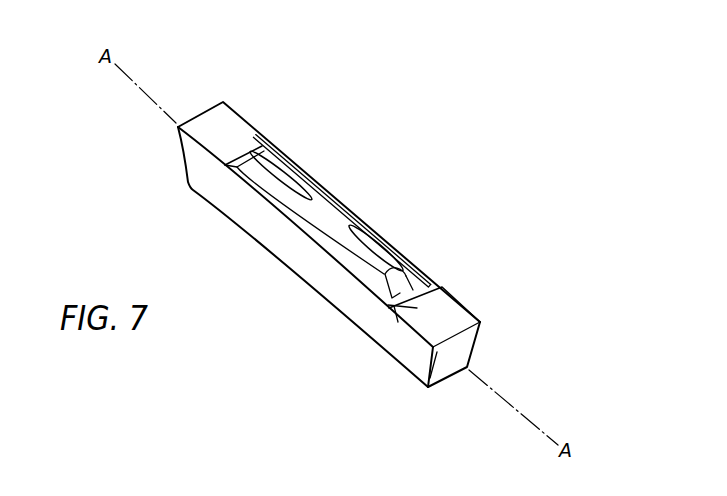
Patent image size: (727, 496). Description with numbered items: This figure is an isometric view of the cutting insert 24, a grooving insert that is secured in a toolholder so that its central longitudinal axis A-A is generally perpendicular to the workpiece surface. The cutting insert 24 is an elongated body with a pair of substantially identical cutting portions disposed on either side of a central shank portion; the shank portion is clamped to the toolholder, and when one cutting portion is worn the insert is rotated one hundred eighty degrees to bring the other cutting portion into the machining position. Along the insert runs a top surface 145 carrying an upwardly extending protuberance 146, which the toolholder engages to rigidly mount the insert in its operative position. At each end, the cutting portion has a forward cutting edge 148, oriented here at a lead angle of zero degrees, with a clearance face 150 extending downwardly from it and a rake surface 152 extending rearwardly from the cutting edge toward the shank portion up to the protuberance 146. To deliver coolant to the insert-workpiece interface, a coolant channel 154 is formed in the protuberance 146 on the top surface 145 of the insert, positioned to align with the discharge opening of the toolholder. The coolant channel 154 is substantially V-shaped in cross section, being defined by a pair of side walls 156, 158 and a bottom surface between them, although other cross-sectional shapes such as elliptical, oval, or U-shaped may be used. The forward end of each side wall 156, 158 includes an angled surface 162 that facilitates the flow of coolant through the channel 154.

The cutting insert 24 is at (450, 248).
The top surface 145 is at (320, 198).
The protuberance 146 is at (333, 210).
The forward cutting edge 148 is at (480, 338).
The clearance face 150 is at (460, 357).
The rake surface 152 is at (455, 320).
The coolant channel 154 is at (277, 162).
The side wall 156 is at (388, 285).
The side wall 158 is at (402, 270).
The angled surface 162 is at (435, 290).